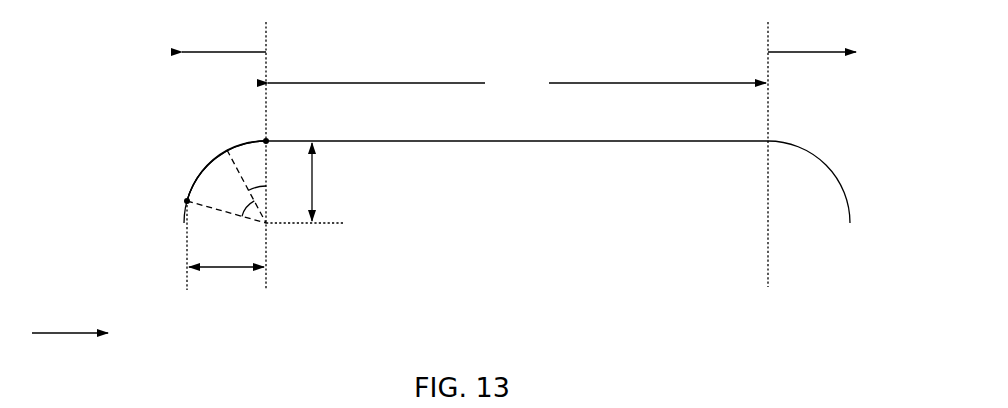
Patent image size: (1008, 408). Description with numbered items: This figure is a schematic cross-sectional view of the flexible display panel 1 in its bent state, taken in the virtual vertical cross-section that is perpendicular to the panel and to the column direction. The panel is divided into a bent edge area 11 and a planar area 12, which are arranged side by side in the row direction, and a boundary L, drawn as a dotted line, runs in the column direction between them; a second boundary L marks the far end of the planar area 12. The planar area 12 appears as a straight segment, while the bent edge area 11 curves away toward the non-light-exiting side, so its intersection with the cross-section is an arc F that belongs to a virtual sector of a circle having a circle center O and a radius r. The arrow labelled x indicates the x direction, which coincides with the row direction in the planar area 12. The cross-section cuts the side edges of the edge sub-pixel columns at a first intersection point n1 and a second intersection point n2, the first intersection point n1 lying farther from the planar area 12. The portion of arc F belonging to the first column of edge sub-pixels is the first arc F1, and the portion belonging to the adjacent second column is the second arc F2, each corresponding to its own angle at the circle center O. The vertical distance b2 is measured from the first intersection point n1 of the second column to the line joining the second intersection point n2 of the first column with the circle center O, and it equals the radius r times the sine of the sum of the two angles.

The flexible display panel 1 is at (500, 141).
The bent edge area 11 is at (517, 53).
The planar area 12 is at (517, 84).
The boundary L is at (266, 37).
The arc F is at (84, 122).
The first arc F1 is at (240, 145).
The second arc F2 is at (187, 199).
The first intersection point n1 is at (168, 221).
The second intersection point n2 is at (282, 125).
The circle center O is at (304, 238).
The radius r is at (312, 182).
The vertical distance b2 is at (225, 247).
The x direction x is at (87, 334).